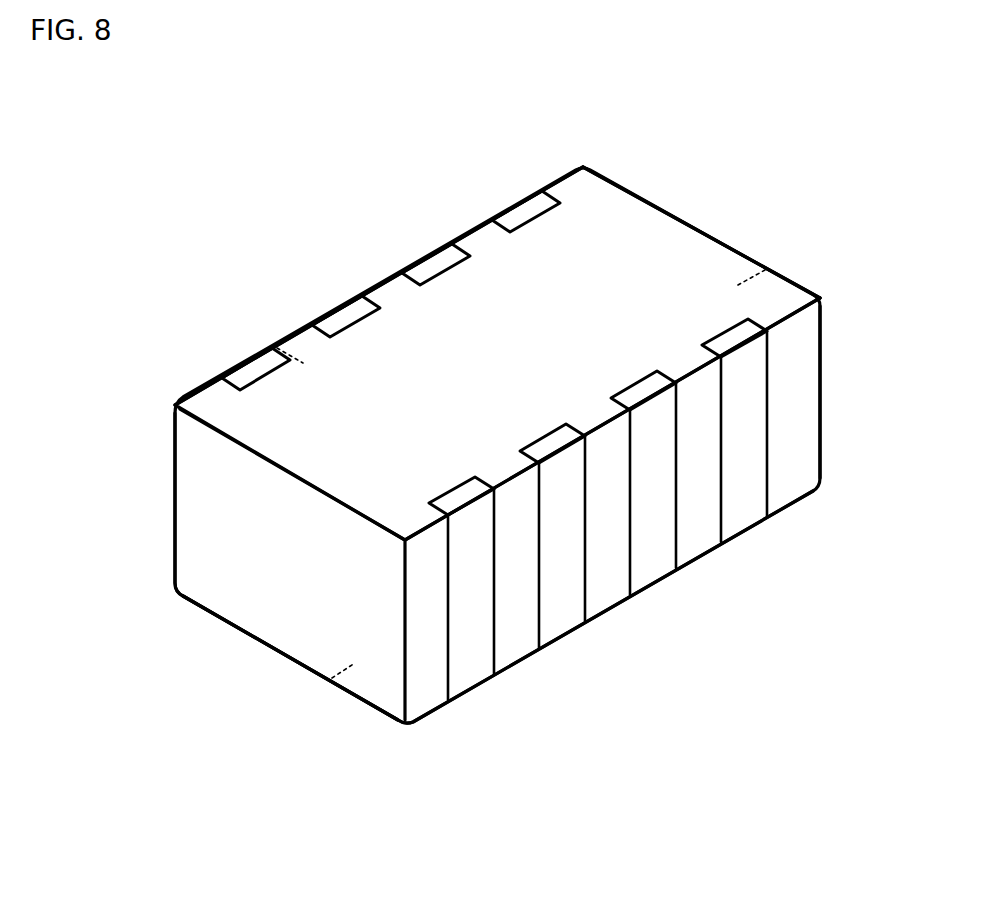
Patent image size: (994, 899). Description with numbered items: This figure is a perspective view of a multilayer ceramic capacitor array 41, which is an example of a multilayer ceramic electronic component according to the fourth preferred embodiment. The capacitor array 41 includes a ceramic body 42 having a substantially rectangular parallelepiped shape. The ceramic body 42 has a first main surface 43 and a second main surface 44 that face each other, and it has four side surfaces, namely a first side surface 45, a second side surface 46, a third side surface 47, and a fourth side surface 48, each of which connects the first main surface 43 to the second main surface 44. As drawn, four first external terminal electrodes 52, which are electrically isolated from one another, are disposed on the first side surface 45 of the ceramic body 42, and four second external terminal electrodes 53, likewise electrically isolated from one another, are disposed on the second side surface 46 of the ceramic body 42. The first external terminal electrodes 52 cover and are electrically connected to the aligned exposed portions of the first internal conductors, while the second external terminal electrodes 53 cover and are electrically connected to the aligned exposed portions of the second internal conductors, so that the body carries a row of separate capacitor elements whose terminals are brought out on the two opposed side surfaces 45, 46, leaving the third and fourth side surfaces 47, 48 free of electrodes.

The multilayer ceramic capacitor array 41 is at (176, 168).
The ceramic body 42 is at (655, 198).
The first main surface 43 is at (652, 255).
The second main surface 44 is at (355, 663).
The first side surface 45 is at (275, 345).
The second side surface 46 is at (607, 593).
The third side surface 47 is at (280, 617).
The fourth side surface 48 is at (770, 262).
The first external terminal electrodes 52 is at (432, 263).
The second external terminal electrodes 53 is at (654, 564).